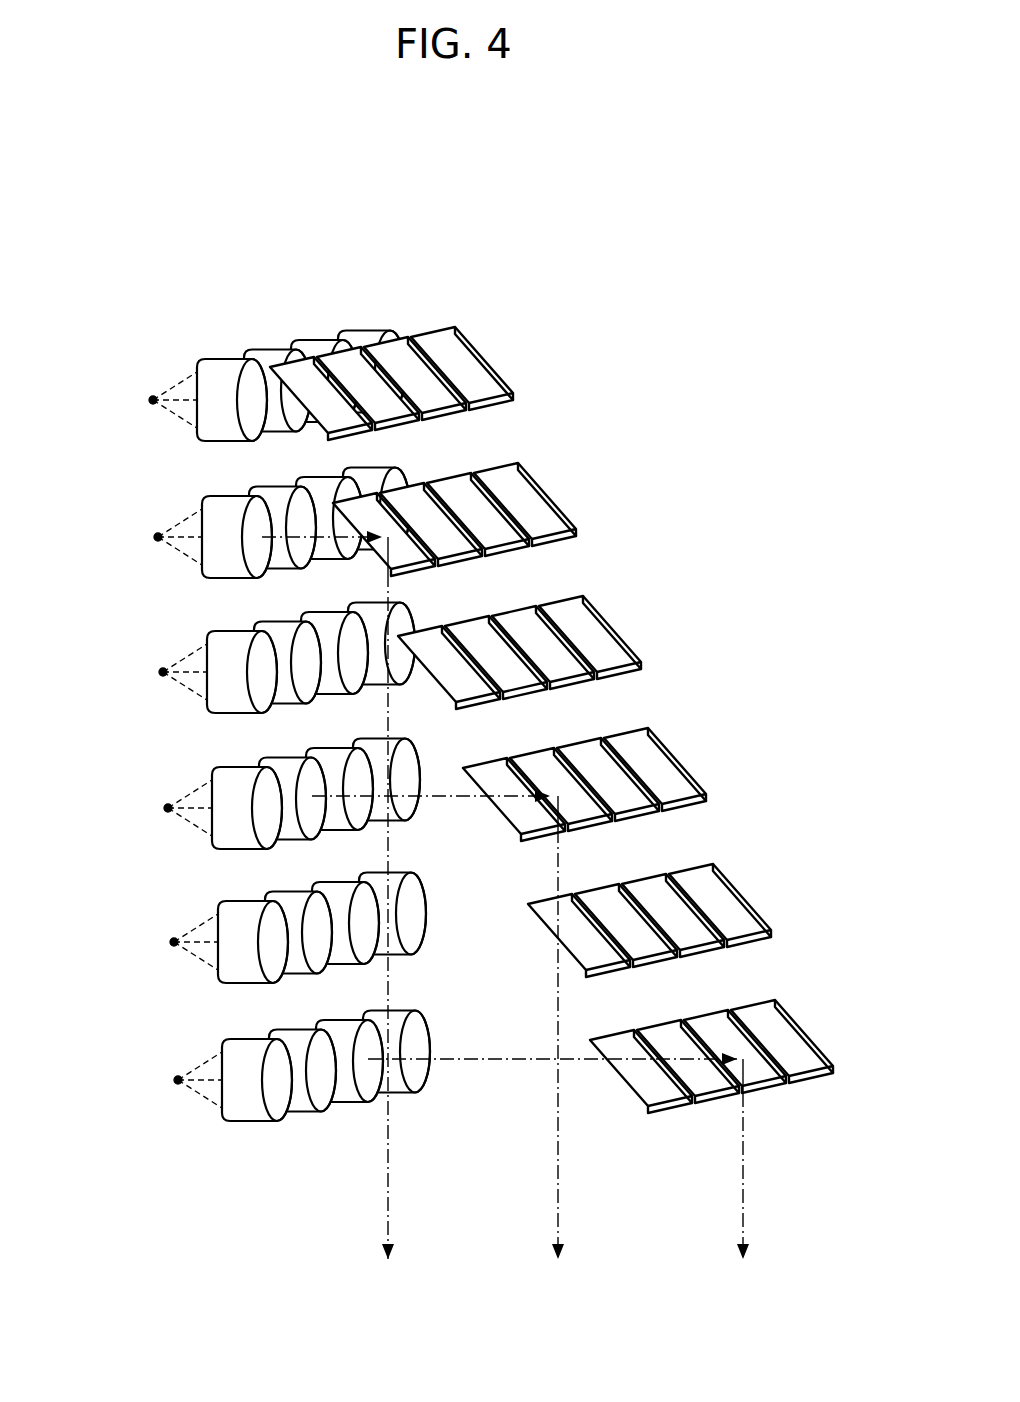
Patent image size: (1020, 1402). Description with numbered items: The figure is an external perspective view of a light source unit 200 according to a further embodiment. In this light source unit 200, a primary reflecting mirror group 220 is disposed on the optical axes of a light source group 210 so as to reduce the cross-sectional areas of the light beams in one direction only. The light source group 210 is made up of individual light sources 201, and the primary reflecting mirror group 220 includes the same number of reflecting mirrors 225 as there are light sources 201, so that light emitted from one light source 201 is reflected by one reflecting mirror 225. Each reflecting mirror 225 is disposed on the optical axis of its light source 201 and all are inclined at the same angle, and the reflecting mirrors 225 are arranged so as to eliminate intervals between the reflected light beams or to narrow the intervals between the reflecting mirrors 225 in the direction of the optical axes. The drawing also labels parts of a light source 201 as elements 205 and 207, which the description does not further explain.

The light source unit 200 is at (466, 246).
The light source group 210 is at (163, 600).
The primary reflecting mirror group 220 is at (563, 419).
The reflecting mirror 225 is at (602, 630).
The light source 201 is at (223, 1178).
The light emitting element 205 is at (175, 1083).
The collimating lens 207 is at (238, 1110).